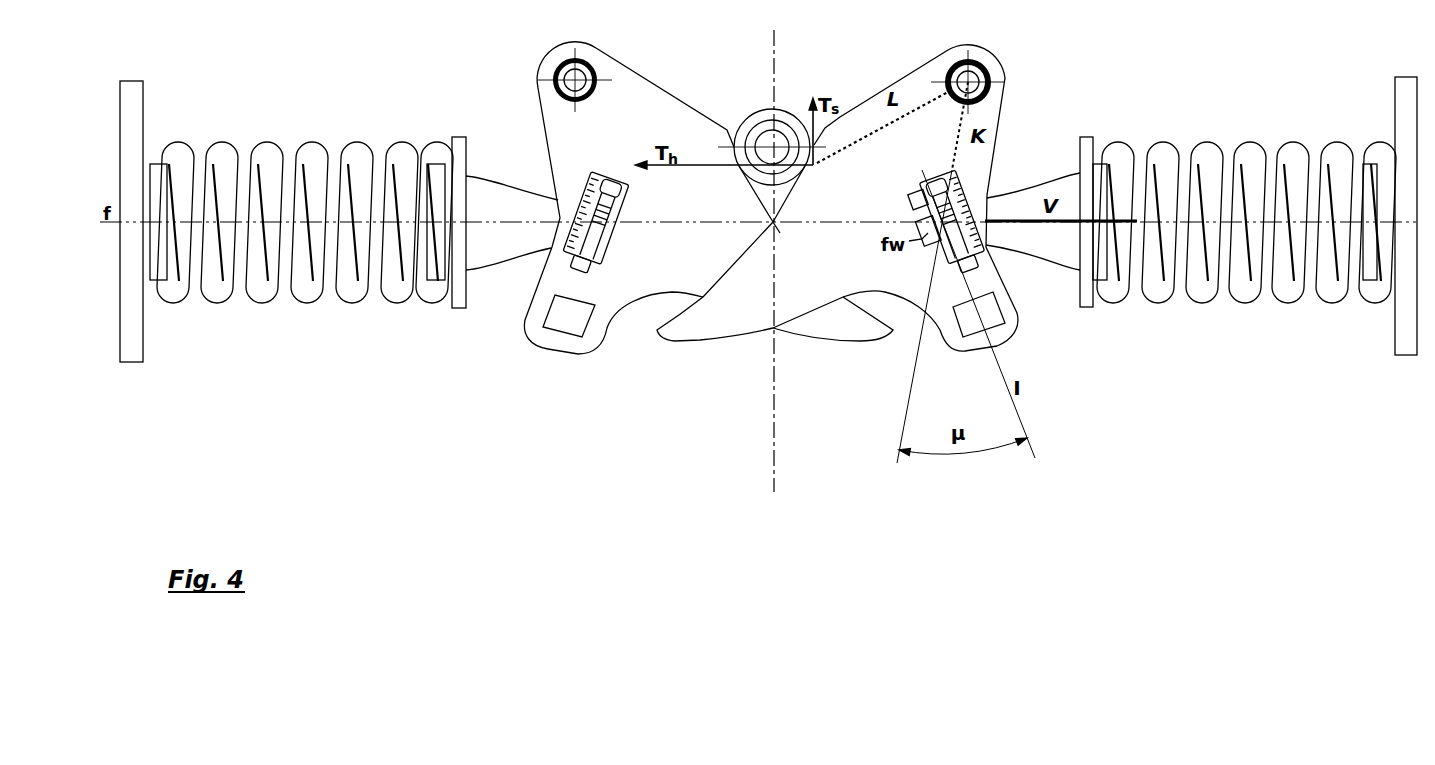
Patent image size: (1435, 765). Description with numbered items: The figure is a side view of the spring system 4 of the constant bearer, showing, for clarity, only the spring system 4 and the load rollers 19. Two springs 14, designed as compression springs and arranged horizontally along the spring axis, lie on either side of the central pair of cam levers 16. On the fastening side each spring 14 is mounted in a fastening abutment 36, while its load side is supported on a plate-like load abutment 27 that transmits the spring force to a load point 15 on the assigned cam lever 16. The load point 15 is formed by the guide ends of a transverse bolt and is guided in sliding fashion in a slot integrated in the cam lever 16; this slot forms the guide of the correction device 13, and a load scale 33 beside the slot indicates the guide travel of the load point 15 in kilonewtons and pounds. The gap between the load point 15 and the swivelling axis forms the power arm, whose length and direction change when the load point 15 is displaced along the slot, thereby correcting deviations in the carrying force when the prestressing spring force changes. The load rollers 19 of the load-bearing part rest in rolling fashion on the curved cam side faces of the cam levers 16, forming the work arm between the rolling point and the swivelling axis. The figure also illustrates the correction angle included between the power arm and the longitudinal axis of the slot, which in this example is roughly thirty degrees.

The spring system 4 is at (758, 212).
The spring 14 is at (393, 147).
The fastening abutment 36 is at (1402, 85).
The load abutment 27 is at (1093, 138).
The load roller 19 is at (757, 117).
The load scale 33 is at (612, 201).
The load point 15 is at (607, 217).
The correction device 13 is at (618, 240).
The cam lever 16 is at (701, 329).